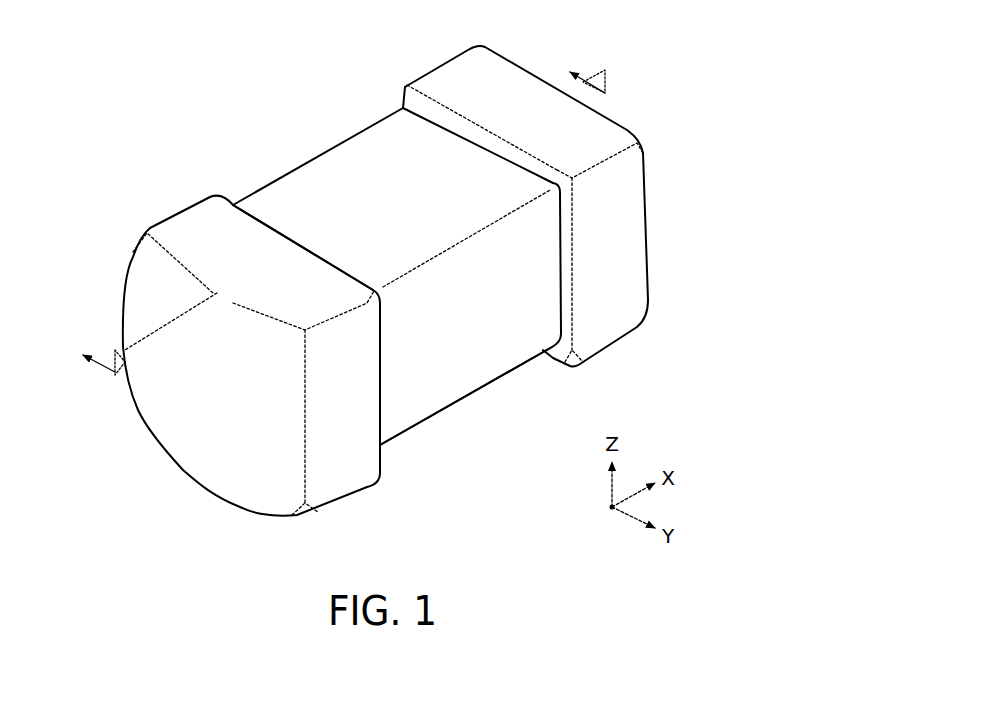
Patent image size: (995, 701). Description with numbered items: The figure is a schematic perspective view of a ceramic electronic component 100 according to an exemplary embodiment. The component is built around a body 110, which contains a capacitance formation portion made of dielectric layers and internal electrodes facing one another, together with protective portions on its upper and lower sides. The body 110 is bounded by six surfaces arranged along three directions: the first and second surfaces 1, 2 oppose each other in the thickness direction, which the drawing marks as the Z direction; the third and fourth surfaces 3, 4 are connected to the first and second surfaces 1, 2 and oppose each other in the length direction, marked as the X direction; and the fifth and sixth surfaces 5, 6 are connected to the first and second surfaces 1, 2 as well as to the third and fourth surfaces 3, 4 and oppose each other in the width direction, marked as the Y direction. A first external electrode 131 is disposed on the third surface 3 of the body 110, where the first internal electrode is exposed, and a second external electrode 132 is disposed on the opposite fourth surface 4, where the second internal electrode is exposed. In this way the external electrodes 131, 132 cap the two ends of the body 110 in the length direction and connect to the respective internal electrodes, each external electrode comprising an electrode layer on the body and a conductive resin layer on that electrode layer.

The ceramic electronic component 100 is at (192, 58).
The body 110 is at (290, 198).
The first external electrode 131 is at (190, 228).
The second external electrode 132 is at (447, 82).
The first surface 1 is at (430, 368).
The second surface 2 is at (405, 165).
The third surface 3 is at (223, 417).
The fourth surface 4 is at (593, 222).
The fifth surface 5 is at (485, 340).
The sixth surface 6 is at (352, 185).